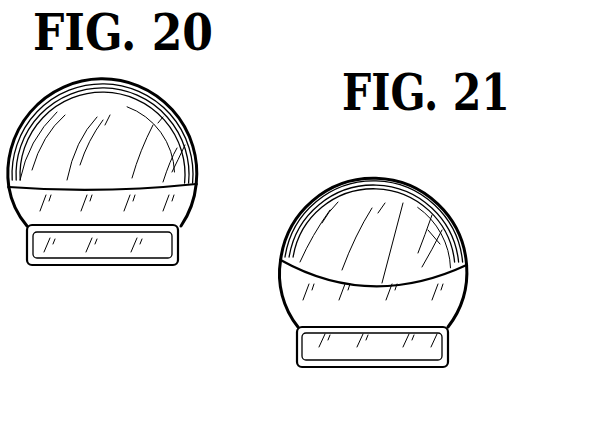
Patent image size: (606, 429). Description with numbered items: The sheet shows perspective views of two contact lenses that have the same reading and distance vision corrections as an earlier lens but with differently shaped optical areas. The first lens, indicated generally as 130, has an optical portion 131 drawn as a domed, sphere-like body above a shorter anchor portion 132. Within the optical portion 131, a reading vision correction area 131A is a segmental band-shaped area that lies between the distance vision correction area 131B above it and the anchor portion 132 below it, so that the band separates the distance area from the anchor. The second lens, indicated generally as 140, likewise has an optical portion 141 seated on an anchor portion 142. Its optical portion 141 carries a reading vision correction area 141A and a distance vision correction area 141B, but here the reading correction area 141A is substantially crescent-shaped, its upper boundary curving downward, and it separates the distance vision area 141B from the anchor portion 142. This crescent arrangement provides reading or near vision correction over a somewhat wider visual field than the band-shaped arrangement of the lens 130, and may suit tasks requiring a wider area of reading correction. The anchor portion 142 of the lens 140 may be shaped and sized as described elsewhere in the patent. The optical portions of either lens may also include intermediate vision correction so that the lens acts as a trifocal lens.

In FIG. 20, the lens 130 is at (141, 186).
In FIG. 20, the optical portion 131 is at (135, 144).
In FIG. 20, the reading vision correction area 131A is at (146, 206).
In FIG. 20, the distance vision correction area 131B is at (157, 143).
In FIG. 20, the anchor portion 132 is at (153, 259).
In FIG. 21, the lens 140 is at (385, 259).
In FIG. 21, the optical portion 141 is at (408, 234).
In FIG. 21, the reading vision correction area 141A is at (427, 298).
In FIG. 21, the distance vision correction area 141B is at (372, 199).
In FIG. 21, the anchor portion 142 is at (327, 345).